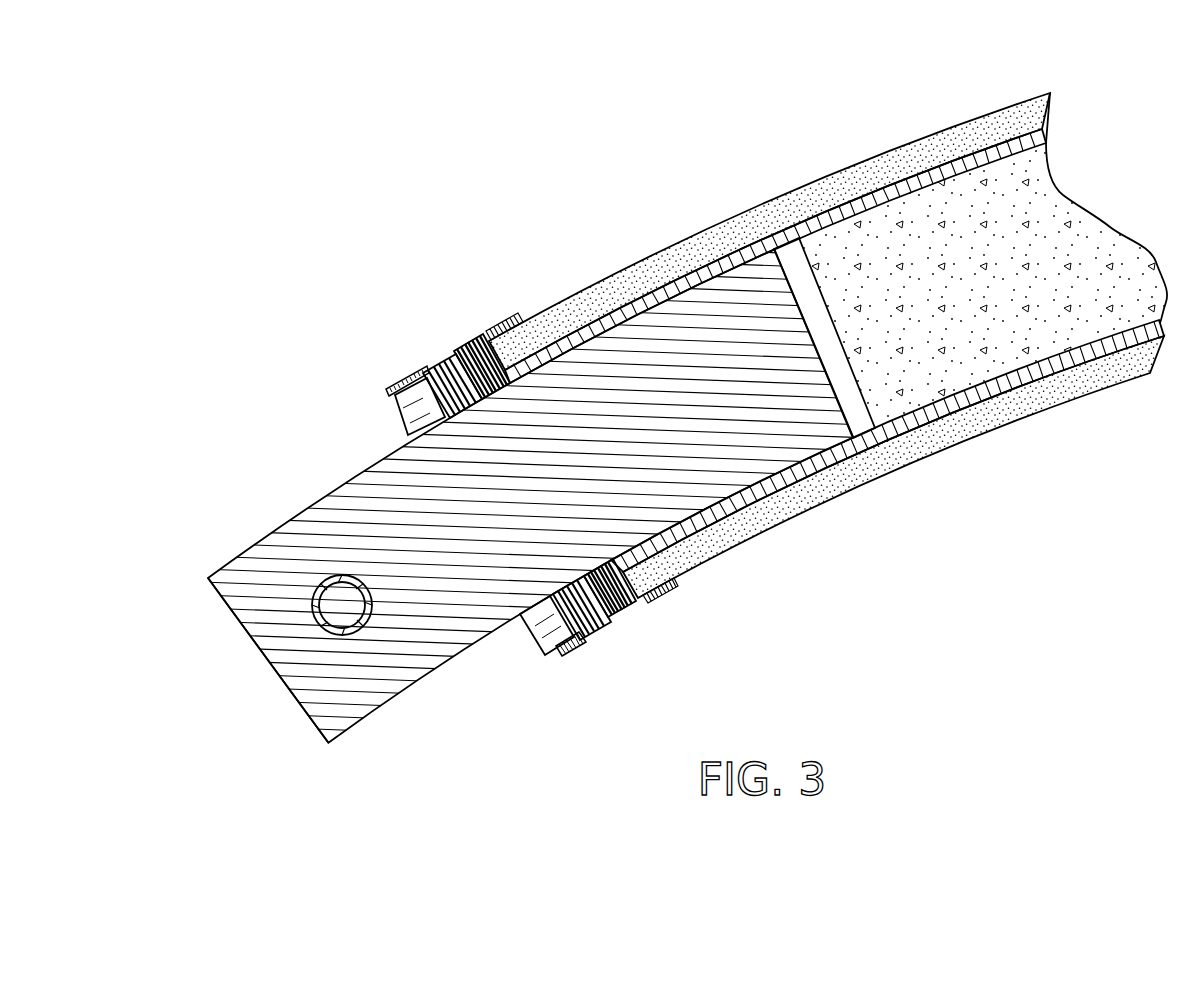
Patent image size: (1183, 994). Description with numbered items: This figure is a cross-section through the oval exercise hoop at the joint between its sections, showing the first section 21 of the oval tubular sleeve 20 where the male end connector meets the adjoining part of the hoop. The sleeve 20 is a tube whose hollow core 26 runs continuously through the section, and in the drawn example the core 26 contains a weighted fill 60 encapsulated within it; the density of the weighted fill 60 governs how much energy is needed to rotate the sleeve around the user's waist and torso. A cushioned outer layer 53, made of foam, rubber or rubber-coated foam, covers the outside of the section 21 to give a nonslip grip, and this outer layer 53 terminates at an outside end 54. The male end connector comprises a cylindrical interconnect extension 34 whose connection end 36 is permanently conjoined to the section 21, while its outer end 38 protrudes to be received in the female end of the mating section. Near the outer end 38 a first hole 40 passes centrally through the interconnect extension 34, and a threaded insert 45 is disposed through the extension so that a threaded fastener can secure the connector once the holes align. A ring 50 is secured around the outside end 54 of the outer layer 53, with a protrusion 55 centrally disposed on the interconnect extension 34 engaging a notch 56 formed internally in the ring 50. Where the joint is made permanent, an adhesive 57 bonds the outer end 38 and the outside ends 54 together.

The oval tubular sleeve 20 is at (967, 150).
The hollow core 26 is at (915, 185).
The weighted fill 60 is at (870, 245).
The cushioned outer layer 53 is at (800, 193).
The connection end 36 is at (773, 282).
The cylindrical interconnect extension 34 is at (603, 352).
The outside end 54 is at (548, 312).
The ring 50 is at (445, 365).
The notch 56 is at (488, 345).
The protrusion 55 is at (420, 366).
The first section 21 is at (407, 412).
The threaded insert 45 is at (322, 583).
The outer end 38 is at (287, 673).
The first hole 40 is at (343, 615).
The adhesive 57 is at (723, 510).